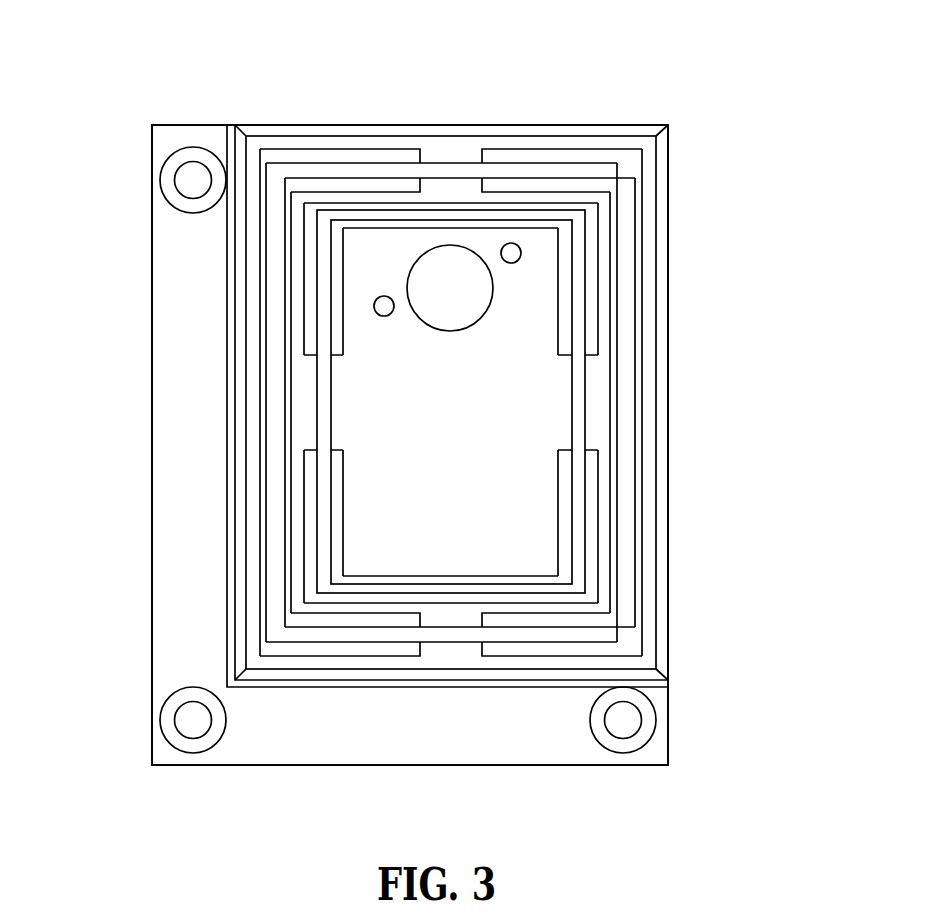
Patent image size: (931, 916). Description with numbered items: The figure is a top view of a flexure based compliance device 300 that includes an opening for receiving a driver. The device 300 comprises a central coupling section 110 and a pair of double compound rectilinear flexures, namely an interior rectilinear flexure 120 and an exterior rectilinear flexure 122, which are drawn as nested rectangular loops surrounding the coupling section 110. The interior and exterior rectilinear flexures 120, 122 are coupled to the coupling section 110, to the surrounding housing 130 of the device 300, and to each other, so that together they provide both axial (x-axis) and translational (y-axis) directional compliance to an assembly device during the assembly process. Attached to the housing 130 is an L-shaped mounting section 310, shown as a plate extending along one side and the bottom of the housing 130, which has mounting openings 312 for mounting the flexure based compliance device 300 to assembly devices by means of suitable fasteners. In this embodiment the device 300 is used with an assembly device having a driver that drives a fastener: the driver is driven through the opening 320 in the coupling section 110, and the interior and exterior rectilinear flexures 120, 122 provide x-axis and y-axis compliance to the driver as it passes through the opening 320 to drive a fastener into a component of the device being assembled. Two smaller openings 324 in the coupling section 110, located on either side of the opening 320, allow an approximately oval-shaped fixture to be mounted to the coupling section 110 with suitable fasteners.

The flexure based compliance device 300 is at (745, 164).
The L-shaped mounting section 310 is at (200, 402).
The mounting openings 312 is at (177, 177).
The housing 130 is at (650, 627).
The exterior rectilinear flexure 122 is at (616, 472).
The interior rectilinear flexure 120 is at (573, 314).
The coupling section 110 is at (415, 416).
The opening 320 is at (450, 243).
The openings 324 is at (384, 294).